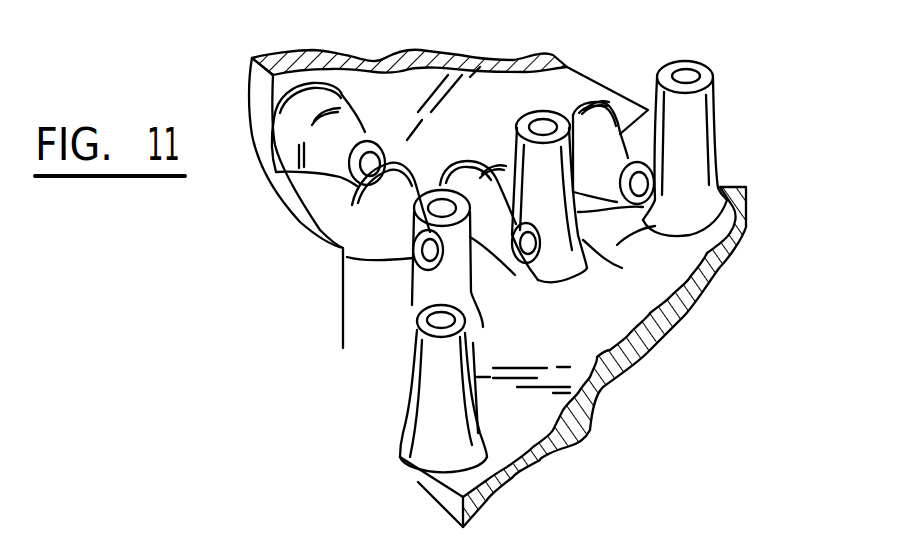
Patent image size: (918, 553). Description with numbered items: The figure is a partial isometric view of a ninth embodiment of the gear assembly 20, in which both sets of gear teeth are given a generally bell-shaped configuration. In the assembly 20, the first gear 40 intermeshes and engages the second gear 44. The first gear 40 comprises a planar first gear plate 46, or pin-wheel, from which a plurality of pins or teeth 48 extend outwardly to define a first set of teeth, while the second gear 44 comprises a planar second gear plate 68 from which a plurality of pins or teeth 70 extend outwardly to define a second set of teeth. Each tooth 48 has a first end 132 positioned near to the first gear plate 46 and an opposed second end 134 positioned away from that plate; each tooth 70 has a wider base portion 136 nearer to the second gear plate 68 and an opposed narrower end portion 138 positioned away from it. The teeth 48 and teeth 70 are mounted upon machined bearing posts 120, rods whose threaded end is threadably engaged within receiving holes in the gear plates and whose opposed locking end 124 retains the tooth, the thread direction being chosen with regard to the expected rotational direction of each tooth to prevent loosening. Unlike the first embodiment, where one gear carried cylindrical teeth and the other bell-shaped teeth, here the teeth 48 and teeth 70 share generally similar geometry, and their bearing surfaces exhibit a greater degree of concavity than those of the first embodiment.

The assembly 20 is at (278, 269).
The first gear 40 is at (430, 492).
The second gear 44 is at (256, 85).
The first gear plate 46 is at (533, 413).
The teeth 48 is at (553, 194).
The second gear plate 68 is at (385, 62).
The teeth 70 is at (341, 161).
The bearing posts 120 is at (537, 120).
The locking end 124 is at (553, 313).
The first end 132 is at (647, 233).
The second end 134 is at (518, 151).
The wider base portion 136 is at (277, 153).
The narrower end portion 138 is at (358, 143).